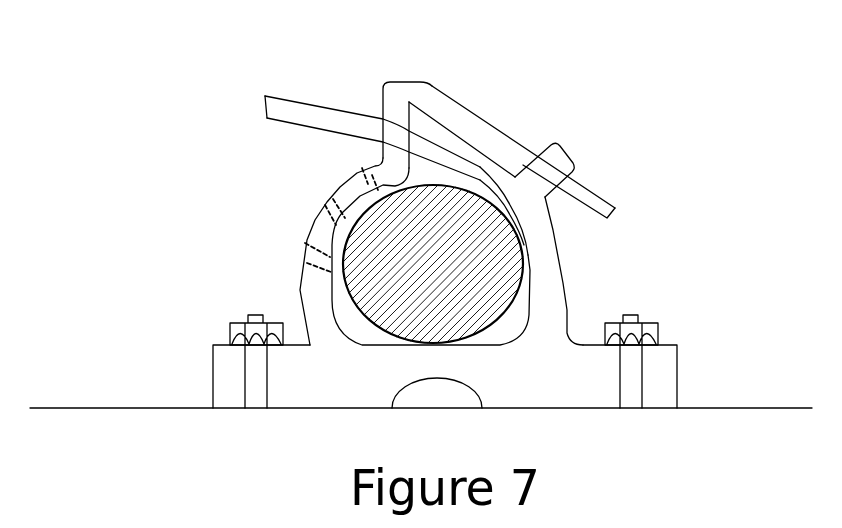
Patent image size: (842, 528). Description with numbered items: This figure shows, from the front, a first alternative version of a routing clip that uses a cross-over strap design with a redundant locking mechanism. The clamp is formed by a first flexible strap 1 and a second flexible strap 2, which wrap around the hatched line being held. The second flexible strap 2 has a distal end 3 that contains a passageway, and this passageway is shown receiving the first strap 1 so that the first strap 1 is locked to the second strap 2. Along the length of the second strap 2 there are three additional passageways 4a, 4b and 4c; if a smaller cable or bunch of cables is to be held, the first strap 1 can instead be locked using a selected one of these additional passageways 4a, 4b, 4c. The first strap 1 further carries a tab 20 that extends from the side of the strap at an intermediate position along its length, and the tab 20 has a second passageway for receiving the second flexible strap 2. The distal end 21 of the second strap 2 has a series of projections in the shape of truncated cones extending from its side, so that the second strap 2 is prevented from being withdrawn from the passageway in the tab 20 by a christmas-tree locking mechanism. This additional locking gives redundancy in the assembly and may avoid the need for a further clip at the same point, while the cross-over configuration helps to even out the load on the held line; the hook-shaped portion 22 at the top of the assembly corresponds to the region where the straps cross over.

The first flexible strap 1 is at (278, 100).
The second flexible strap 2 is at (298, 293).
The distal end 3 is at (382, 112).
The additional passageway 4a is at (360, 178).
The additional passageway 4b is at (328, 212).
The additional passageway 4c is at (318, 260).
The tab 20 is at (560, 156).
The distal end 21 is at (595, 202).
The clip arm 22 is at (410, 90).